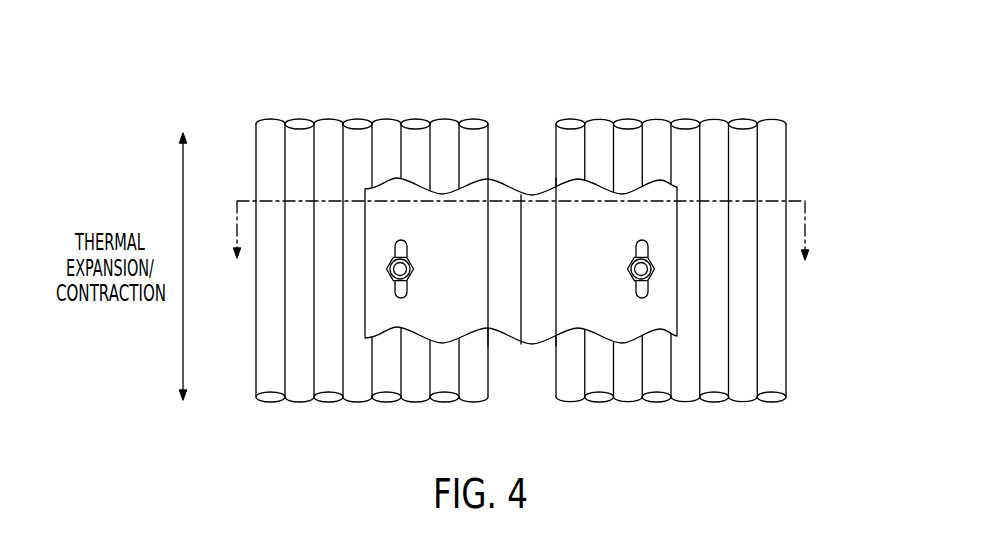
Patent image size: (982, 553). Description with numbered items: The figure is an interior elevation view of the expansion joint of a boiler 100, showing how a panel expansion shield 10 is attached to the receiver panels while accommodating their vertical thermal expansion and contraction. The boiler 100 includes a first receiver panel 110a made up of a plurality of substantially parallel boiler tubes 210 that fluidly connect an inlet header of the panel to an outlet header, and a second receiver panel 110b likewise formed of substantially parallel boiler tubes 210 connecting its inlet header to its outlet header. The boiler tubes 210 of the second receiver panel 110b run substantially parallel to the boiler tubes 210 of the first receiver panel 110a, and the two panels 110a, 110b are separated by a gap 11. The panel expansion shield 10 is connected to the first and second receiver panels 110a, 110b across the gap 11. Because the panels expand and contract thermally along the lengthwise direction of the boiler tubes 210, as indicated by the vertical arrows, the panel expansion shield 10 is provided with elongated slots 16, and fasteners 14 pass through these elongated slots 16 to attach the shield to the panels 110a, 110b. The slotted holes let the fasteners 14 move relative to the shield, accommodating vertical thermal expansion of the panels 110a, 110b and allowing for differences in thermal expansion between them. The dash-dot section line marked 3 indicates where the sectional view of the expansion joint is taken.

The boiler 100 is at (523, 231).
The first receiver panel 110a is at (256, 337).
The second receiver panel 110b is at (786, 336).
The boiler tubes 210 is at (523, 286).
The panel expansion shield 10 is at (667, 216).
The gap 11 is at (521, 385).
The fasteners 14 is at (413, 263).
The elongated slots 16 is at (404, 292).
The section line 3- 3 is at (521, 246).